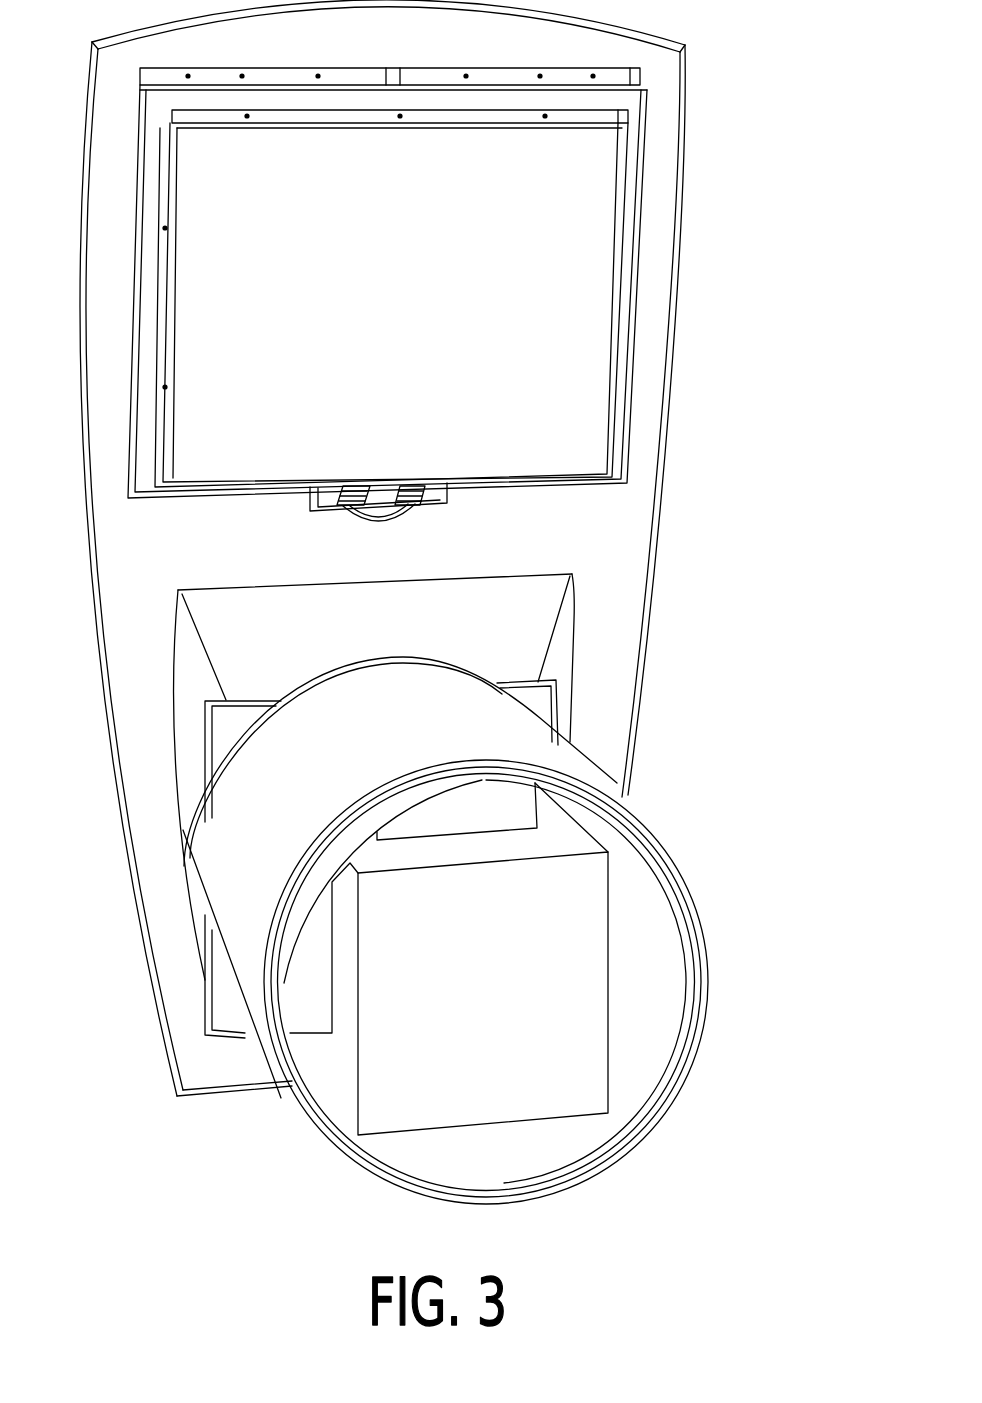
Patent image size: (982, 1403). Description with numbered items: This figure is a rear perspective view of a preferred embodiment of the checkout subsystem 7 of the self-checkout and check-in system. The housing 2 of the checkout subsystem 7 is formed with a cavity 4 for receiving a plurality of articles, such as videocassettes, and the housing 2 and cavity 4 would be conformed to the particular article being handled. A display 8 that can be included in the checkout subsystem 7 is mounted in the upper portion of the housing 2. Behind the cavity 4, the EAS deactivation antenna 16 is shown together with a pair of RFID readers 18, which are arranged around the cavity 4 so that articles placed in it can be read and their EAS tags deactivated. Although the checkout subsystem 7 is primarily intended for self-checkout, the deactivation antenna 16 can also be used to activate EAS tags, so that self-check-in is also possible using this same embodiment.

The housing 2 is at (637, 728).
The cavity 4 is at (497, 988).
The checkout subsystem 7 is at (772, 358).
The display 8 is at (386, 268).
The EAS deactivation antenna 16 is at (366, 762).
The RFID readers 18 is at (305, 970).